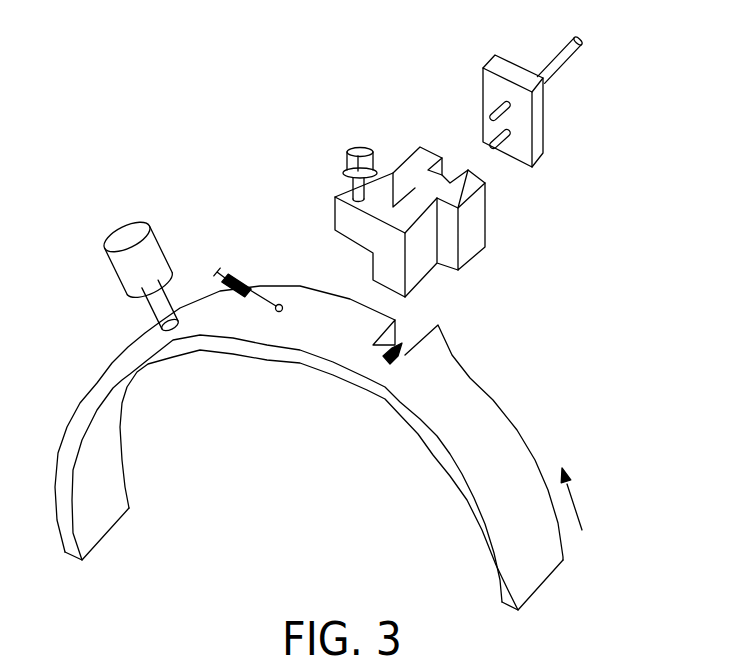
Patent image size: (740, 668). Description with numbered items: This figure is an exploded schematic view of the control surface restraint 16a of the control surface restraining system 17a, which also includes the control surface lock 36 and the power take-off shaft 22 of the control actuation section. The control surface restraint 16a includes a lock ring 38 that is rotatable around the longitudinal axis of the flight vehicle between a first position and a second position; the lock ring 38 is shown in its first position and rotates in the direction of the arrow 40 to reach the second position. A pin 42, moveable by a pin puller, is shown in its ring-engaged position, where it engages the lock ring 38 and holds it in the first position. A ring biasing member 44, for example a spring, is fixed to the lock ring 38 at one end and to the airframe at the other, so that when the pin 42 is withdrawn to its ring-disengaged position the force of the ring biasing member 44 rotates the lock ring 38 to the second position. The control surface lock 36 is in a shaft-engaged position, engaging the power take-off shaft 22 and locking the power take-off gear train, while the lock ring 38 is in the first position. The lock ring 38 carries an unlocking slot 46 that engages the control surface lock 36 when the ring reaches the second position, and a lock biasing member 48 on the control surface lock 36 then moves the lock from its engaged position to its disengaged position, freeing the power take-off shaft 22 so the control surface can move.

The control surface restraint 16a is at (200, 170).
The control surface restraining system 17a is at (292, 106).
The power take-off shaft 22 is at (538, 123).
The control surface lock 36 is at (467, 228).
The lock ring 38 is at (508, 478).
The arrow 40 is at (571, 500).
The pin 42 is at (133, 268).
The ring biasing member 44 is at (238, 278).
The unlocking slot 46 is at (388, 358).
The lock biasing member 48 is at (347, 160).